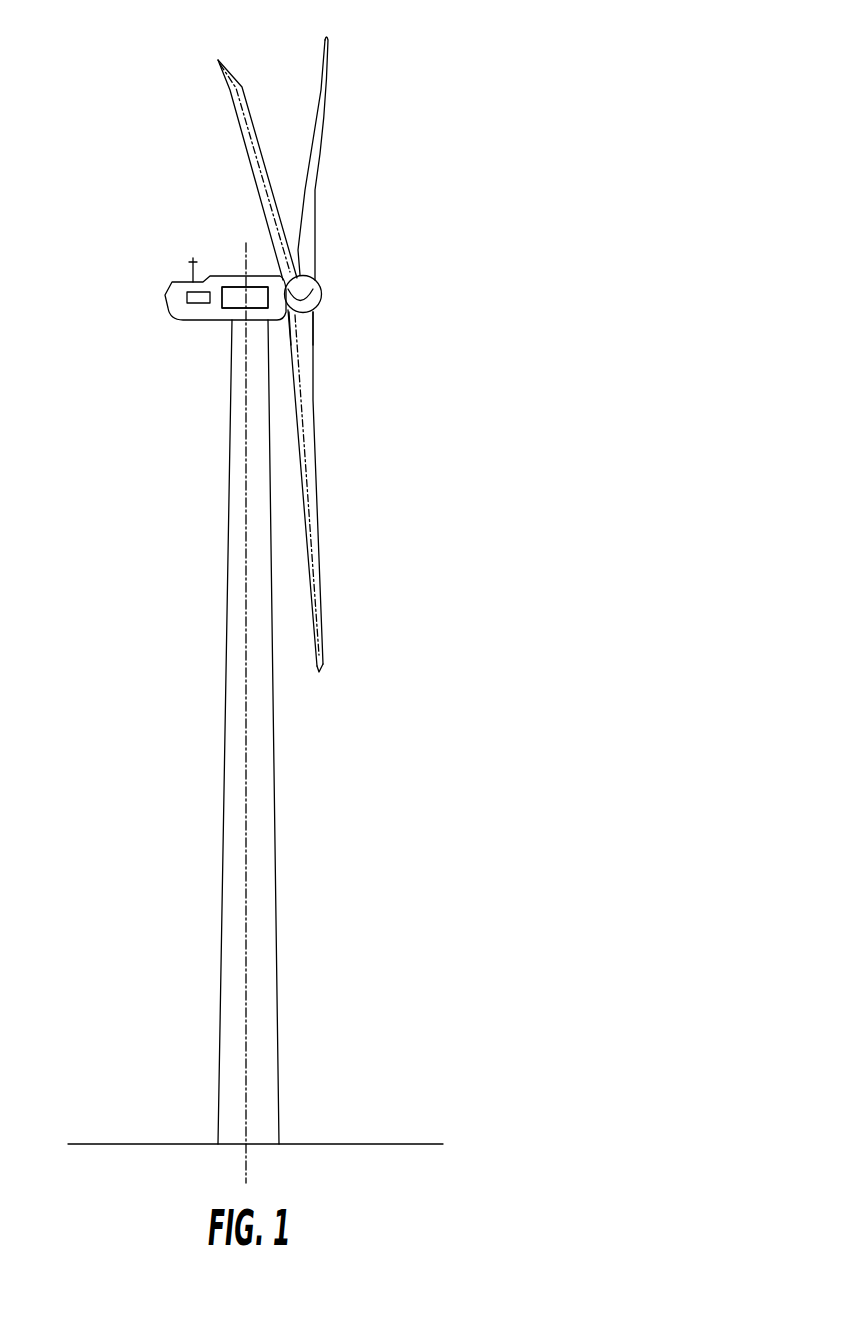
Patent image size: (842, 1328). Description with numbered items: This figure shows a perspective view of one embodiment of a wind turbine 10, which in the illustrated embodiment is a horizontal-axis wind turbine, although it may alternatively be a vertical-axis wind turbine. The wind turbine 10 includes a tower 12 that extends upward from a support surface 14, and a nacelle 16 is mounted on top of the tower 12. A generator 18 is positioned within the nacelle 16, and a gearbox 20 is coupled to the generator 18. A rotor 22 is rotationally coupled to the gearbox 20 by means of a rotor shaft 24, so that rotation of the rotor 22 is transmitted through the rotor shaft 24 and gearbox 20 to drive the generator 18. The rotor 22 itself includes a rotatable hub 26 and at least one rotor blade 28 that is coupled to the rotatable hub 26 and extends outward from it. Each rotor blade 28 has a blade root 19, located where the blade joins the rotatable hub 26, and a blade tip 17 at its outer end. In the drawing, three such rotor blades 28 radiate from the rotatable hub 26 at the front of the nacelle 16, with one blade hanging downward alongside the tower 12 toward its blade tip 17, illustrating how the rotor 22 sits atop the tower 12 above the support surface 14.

The wind turbine 10 is at (462, 88).
The tower 12 is at (223, 858).
The support surface 14 is at (144, 1144).
The nacelle 16 is at (183, 320).
The blade tip 17 is at (323, 668).
The generator 18 is at (190, 282).
The blade root 19 is at (313, 331).
The gearbox 20 is at (232, 276).
The rotor 22 is at (331, 268).
The rotor shaft 24 is at (277, 298).
The rotatable hub 26 is at (322, 304).
The rotor blade 28 is at (234, 126).